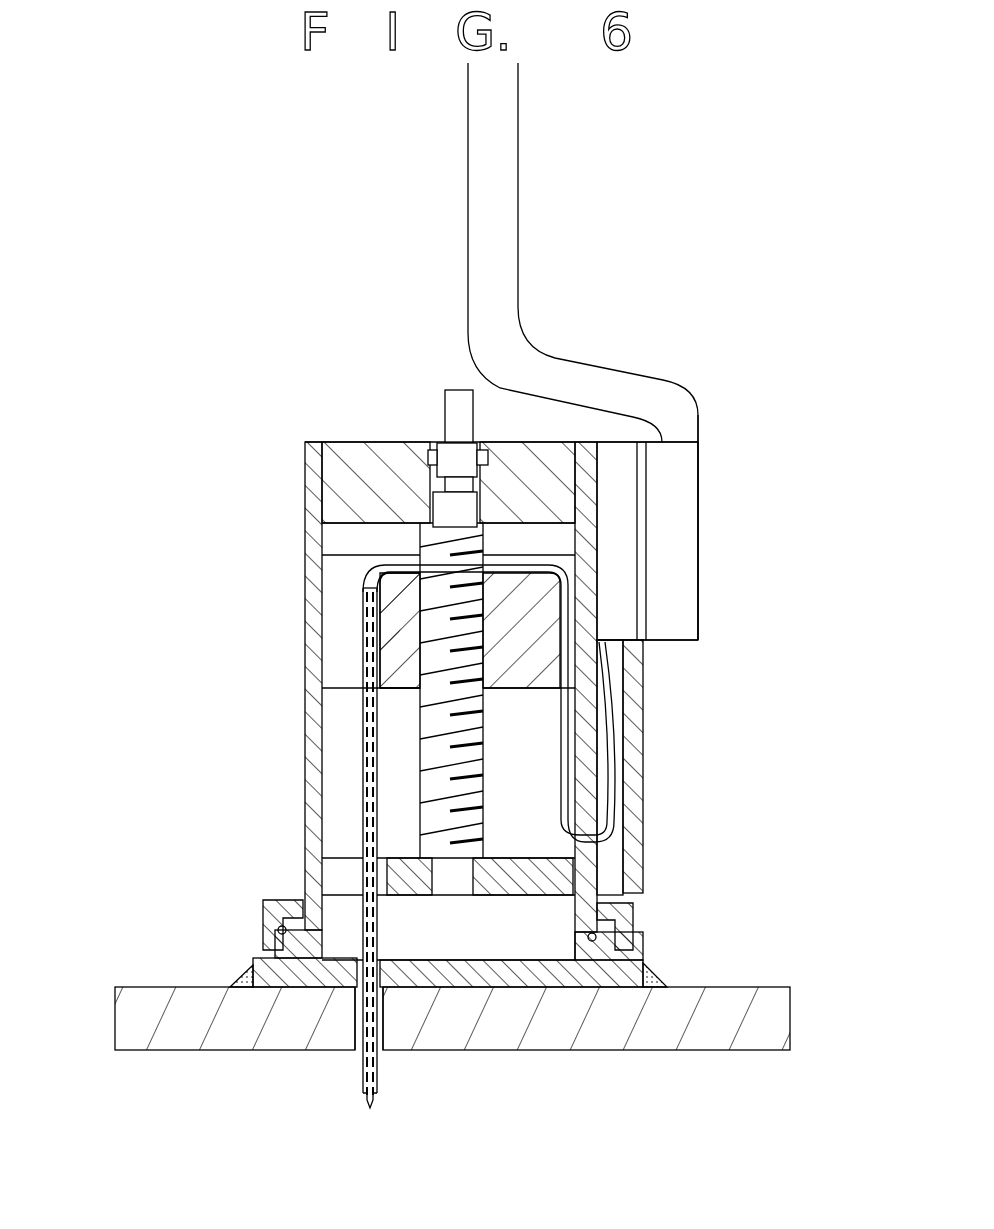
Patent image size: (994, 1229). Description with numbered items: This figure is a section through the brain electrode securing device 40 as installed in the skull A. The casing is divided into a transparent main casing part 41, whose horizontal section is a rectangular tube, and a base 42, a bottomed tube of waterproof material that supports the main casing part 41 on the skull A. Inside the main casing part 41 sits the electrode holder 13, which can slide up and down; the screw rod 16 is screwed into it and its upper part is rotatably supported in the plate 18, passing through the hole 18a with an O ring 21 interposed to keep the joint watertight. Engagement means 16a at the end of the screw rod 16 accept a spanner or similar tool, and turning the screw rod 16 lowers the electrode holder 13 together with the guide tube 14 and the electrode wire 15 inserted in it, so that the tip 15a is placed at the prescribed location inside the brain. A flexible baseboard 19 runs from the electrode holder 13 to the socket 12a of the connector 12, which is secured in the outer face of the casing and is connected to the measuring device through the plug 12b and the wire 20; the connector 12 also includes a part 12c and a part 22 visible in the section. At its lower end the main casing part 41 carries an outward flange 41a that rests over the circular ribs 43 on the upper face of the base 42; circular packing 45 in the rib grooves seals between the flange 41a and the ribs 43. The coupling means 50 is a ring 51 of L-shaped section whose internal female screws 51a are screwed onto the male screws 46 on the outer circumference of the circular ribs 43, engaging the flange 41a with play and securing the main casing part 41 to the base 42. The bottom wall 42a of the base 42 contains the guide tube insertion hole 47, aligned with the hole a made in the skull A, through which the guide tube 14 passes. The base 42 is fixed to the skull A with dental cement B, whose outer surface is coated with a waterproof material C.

The wire 20 is at (497, 270).
The brain electrode securing device 40 is at (762, 408).
The plate 18 is at (345, 462).
The engagement means 16a is at (458, 397).
The hole 18a is at (437, 455).
The O ring 21 is at (437, 462).
The socket 12a is at (625, 490).
The connector slit 12c is at (643, 598).
The connector 12 is at (702, 547).
The plug 12b is at (665, 645).
The screw rod 16 is at (465, 742).
The electrode holder 13 is at (343, 602).
The main casing part 41 is at (305, 690).
The flexible baseboard 19 is at (615, 722).
The side plate 22 is at (642, 765).
The flange 41a is at (612, 892).
The circular ribs 43 is at (573, 947).
The guide tube 14 is at (358, 722).
The electrode wire 15 is at (355, 760).
The tip (electrode) 15a is at (376, 1104).
The hole a is at (357, 1037).
The coupling means 50 is at (246, 913).
The female screws 51a is at (275, 935).
The male screws 46 is at (272, 945).
The circular packing 45 is at (207, 1050).
The skull A is at (128, 982).
The ring 51 is at (628, 908).
The waterproof material C is at (648, 957).
The base 42 is at (604, 996).
The dental cement B is at (660, 975).
The bottom wall 42a is at (518, 988).
The guide tube insertion hole 47 is at (335, 990).